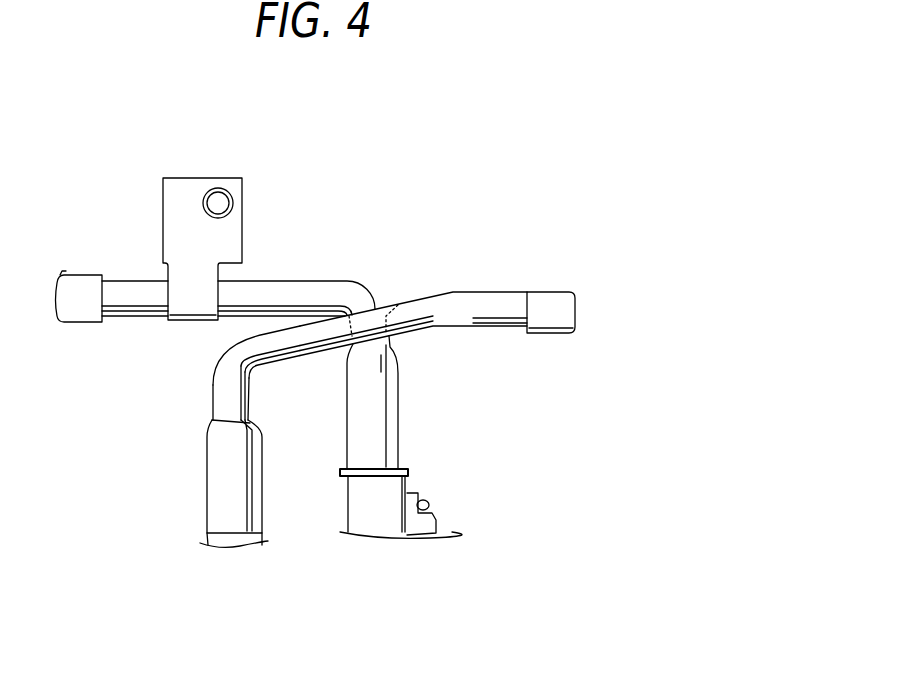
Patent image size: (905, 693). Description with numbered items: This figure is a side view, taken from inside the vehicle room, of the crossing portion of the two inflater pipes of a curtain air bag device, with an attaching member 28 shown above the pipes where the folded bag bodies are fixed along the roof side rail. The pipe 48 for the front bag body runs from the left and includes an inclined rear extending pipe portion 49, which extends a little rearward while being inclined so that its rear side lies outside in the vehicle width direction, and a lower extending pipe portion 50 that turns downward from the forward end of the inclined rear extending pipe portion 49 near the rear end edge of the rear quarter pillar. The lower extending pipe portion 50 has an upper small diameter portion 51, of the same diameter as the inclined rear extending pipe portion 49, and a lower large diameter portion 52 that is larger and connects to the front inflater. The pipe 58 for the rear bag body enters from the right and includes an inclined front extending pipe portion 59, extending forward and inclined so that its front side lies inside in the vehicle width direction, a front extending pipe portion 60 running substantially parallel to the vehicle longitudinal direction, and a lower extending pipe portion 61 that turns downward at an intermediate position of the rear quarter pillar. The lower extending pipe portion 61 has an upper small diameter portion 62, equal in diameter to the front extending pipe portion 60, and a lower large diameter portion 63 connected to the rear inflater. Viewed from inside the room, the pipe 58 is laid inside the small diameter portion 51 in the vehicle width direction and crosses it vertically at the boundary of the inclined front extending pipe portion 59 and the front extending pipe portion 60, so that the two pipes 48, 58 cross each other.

The attaching member 28 is at (183, 197).
The pipe 48 is at (125, 271).
The inclined rear extending pipe portion 49 is at (293, 284).
The lower extending pipe portion 50 is at (400, 436).
The small diameter portion 51 is at (398, 305).
The large diameter portion 52 is at (400, 455).
The pipe 58 is at (526, 282).
The inclined front extending pipe portion 59 is at (417, 318).
The front extending pipe portion 60 is at (287, 343).
The lower extending pipe portion 61 is at (217, 473).
The small diameter portion 62 is at (223, 401).
The large diameter portion 63 is at (208, 457).